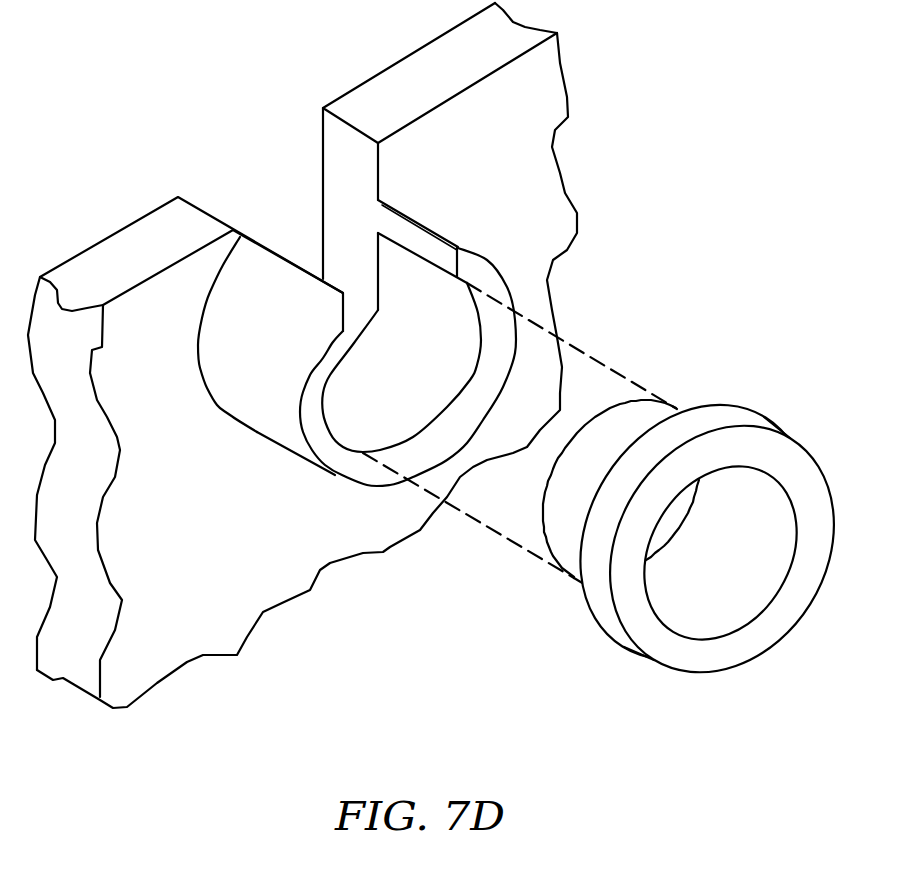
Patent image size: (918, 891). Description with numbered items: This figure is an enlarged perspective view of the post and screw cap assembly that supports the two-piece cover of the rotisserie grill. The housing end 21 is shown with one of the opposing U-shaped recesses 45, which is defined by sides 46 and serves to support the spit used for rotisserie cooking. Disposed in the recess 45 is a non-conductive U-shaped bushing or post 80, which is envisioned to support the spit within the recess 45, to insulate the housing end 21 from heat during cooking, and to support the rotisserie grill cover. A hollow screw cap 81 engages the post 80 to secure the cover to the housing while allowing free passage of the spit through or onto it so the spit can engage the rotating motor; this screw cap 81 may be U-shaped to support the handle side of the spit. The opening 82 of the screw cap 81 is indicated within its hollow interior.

The end of housing 21 is at (503, 160).
The U-shaped recess 45 is at (218, 140).
The sides 46 is at (210, 212).
The non-conductive U-shaped bushing 80 is at (343, 460).
The hollow screw cap 81 is at (655, 647).
The bore of bushing 82 is at (736, 584).